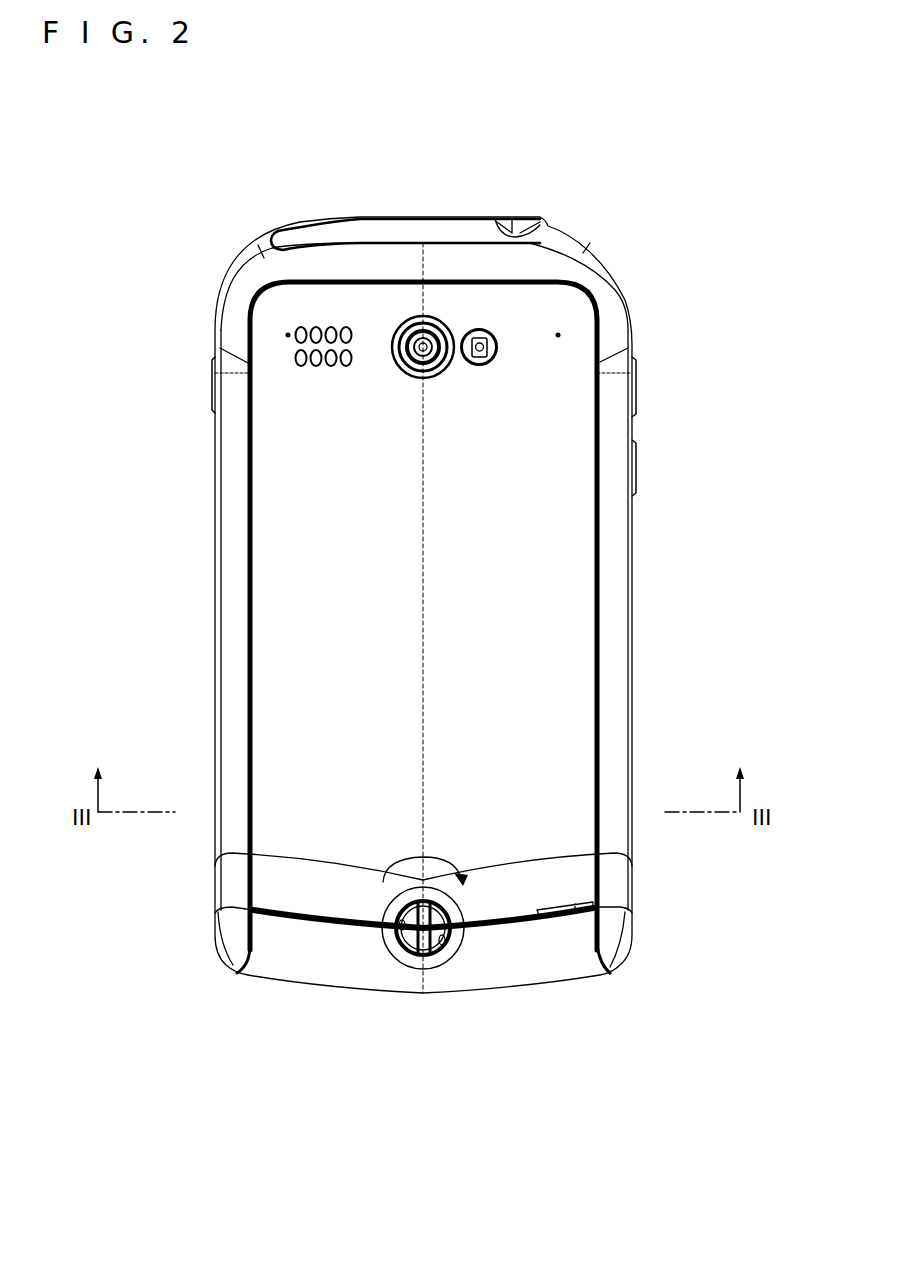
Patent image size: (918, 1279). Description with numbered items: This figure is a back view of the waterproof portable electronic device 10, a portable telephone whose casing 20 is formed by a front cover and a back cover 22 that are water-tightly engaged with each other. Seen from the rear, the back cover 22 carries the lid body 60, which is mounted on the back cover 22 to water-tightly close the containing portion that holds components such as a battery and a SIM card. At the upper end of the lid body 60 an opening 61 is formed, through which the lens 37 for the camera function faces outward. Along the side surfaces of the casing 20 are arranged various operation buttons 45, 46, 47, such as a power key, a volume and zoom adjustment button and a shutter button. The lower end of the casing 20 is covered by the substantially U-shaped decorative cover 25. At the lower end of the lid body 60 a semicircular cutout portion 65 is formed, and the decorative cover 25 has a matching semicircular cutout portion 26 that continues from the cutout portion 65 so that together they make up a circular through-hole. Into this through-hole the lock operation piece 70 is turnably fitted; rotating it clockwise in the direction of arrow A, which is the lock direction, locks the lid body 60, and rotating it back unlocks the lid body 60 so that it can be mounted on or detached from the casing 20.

The electronic device 10 is at (662, 153).
The casing 20 is at (505, 605).
The back cover 22 is at (612, 705).
The decorative cover 25 is at (578, 952).
The cutout portion 26 is at (458, 945).
The lens 37 is at (436, 340).
The operation button 45 is at (636, 381).
The operation button 46 is at (636, 468).
The operation button 47 is at (213, 386).
The lid body 60 is at (535, 615).
The opening 61 is at (406, 325).
The cutout portion 65 is at (400, 940).
The lock operation piece 70 is at (410, 942).
The arrow A is at (442, 863).